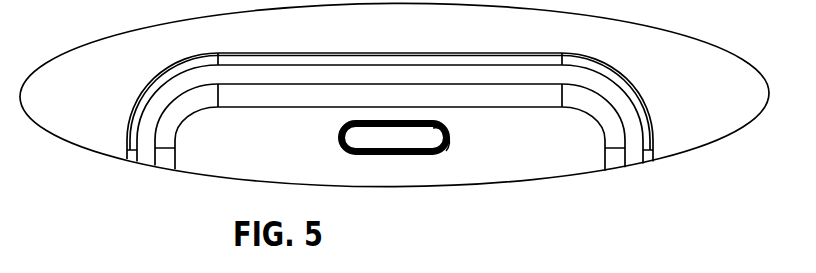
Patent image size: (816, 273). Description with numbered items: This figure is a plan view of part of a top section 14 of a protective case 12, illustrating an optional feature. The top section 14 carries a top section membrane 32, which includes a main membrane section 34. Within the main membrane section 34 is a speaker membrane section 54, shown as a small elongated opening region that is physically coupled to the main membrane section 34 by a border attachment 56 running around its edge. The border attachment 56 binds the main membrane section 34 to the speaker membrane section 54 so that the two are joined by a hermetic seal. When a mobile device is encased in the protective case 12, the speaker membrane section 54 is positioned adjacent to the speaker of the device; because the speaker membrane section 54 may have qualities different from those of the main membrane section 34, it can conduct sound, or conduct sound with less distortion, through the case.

The protective case 12 is at (395, 122).
The top section 14 is at (132, 115).
The top section membrane 32 is at (569, 167).
The main membrane section 34 is at (532, 147).
The speaker membrane section 54 is at (417, 138).
The border attachment 56 is at (448, 135).